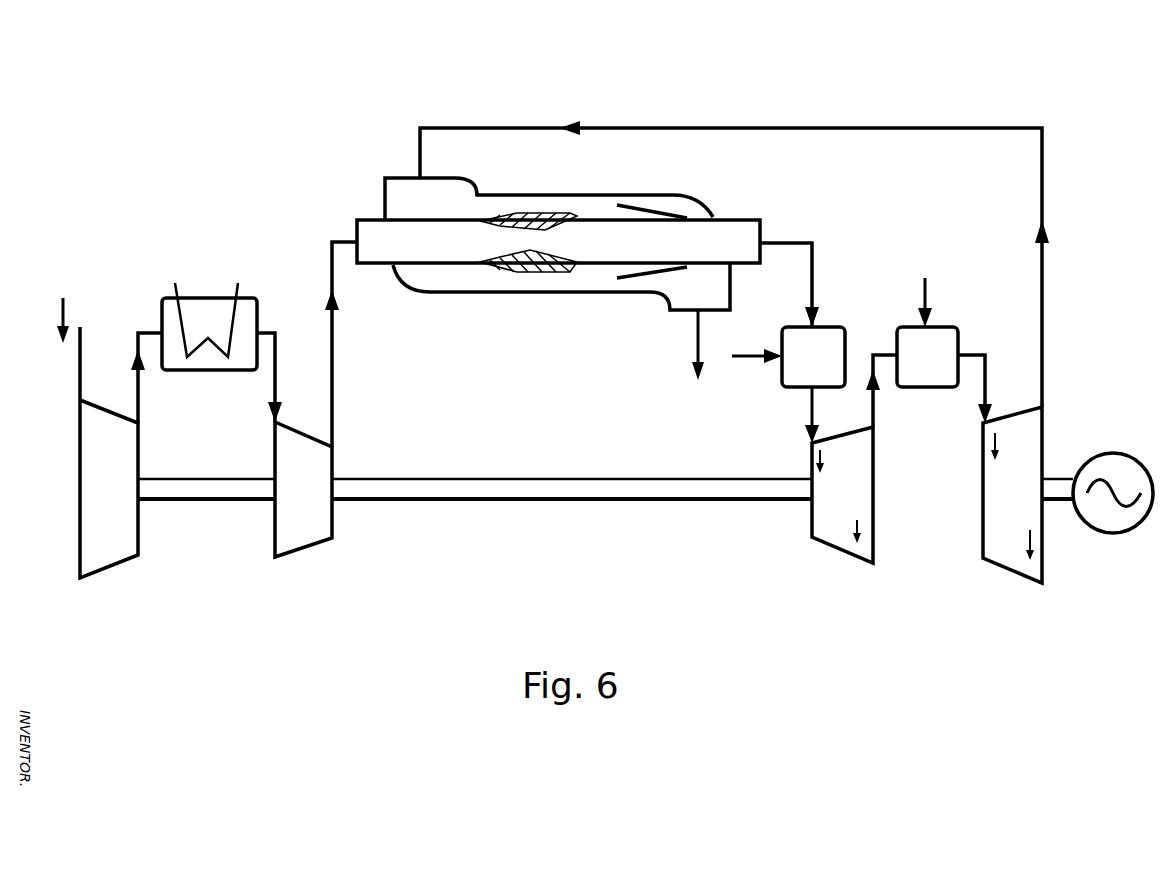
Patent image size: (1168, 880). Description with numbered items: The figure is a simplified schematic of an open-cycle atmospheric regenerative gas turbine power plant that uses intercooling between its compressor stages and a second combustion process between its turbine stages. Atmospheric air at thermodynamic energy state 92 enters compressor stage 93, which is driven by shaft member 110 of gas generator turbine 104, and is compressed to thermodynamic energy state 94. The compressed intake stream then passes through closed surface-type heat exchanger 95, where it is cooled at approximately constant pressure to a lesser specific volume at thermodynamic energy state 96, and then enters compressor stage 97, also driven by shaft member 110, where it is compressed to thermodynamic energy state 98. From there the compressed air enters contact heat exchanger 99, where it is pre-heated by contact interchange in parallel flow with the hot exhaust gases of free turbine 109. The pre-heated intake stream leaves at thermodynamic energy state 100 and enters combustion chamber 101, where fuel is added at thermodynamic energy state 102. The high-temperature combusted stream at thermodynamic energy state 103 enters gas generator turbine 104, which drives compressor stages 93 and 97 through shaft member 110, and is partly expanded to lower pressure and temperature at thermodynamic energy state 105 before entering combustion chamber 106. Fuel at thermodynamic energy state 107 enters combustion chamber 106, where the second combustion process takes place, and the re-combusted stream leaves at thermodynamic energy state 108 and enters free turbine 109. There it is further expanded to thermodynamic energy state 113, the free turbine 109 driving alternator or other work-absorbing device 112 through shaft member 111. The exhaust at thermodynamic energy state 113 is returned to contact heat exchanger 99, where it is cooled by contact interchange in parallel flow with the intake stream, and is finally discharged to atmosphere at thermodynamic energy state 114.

The thermodynamic energy state 92 is at (85, 372).
The compressor stage 93 is at (122, 497).
The thermodynamic energy state 94 is at (132, 405).
The closed surface-type heat exchanger 95 is at (200, 303).
The thermodynamic energy state 96 is at (275, 392).
The compressor stage 97 is at (318, 495).
The thermodynamic energy state 98 is at (327, 393).
The contact heat exchanger 99 is at (515, 285).
The thermodynamic energy state 100 is at (817, 267).
The combustion chamber 101 is at (836, 370).
The thermodynamic energy state 102 is at (752, 362).
The thermodynamic energy state 103 is at (808, 423).
The gas generator turbine 104 is at (860, 503).
The thermodynamic energy state 105 is at (863, 408).
The combustion chamber 106 is at (950, 370).
The thermodynamic energy state 107 is at (925, 298).
The thermodynamic energy state 108 is at (987, 393).
The free turbine 109 is at (1032, 503).
The shaft member 110 is at (218, 493).
The shaft member 111 is at (1055, 477).
The alternator or other work-absorbing device 112 is at (1113, 460).
The thermodynamic energy state 113 is at (483, 135).
The thermodynamic energy state 114 is at (698, 327).